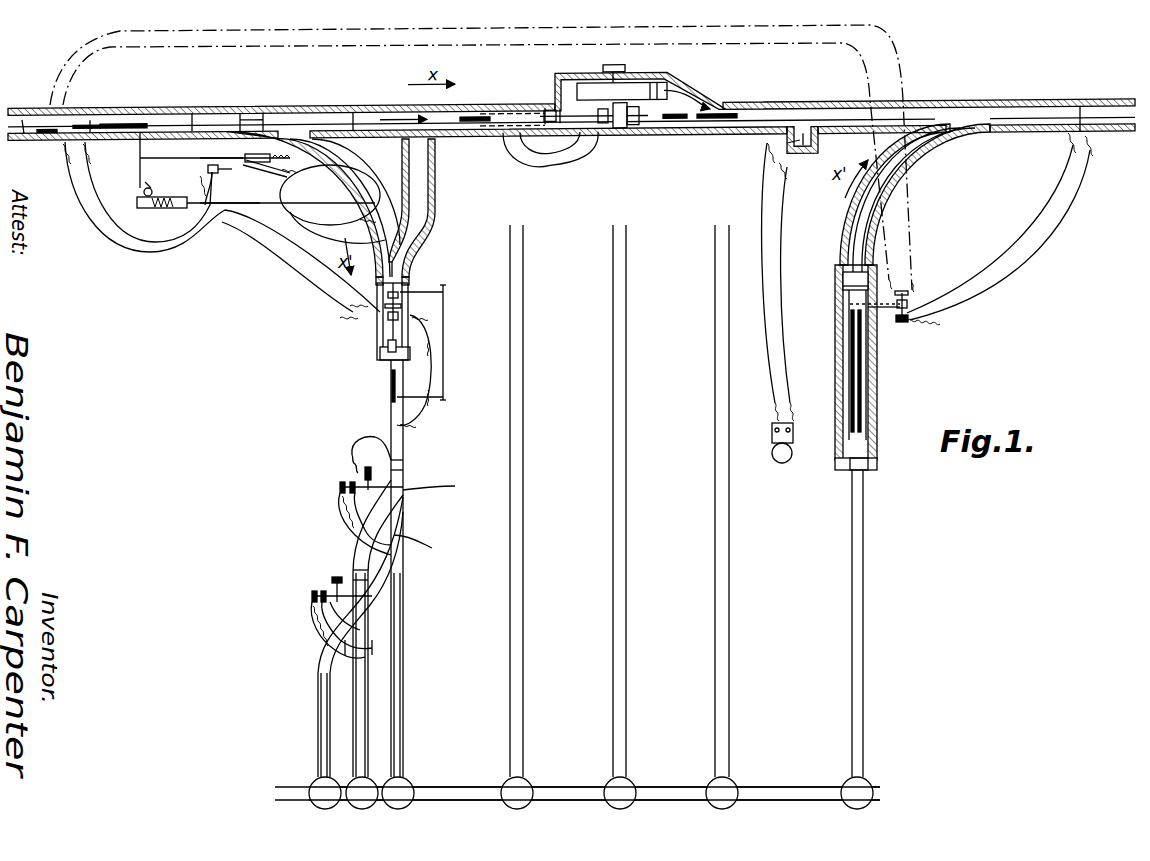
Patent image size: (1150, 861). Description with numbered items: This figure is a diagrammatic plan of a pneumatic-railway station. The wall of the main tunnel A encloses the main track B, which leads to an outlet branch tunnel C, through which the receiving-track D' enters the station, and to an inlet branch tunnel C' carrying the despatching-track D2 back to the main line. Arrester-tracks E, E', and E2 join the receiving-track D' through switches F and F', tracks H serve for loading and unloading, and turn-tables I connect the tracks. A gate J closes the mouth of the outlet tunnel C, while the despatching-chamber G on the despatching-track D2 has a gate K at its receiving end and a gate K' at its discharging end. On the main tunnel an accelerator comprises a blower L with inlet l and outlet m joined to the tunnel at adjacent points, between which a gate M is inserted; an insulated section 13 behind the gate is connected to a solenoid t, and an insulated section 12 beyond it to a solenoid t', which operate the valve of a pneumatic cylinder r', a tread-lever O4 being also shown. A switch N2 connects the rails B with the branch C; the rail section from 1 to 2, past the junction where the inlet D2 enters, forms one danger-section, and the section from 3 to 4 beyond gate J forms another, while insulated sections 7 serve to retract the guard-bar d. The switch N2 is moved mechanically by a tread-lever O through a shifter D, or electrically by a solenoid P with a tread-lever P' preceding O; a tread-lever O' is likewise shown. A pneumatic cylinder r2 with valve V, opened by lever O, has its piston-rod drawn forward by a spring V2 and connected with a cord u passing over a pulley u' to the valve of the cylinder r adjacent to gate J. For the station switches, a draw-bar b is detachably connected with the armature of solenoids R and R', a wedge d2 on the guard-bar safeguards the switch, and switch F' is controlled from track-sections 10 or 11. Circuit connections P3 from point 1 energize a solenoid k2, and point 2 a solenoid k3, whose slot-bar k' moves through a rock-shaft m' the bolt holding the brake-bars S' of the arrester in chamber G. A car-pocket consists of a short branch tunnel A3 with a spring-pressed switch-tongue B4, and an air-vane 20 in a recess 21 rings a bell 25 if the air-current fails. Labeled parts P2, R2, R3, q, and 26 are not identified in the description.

The main tunnel wall A is at (987, 112).
The main track B is at (24, 134).
The blower L is at (558, 88).
The blower inlet l is at (628, 96).
The solenoid t' is at (595, 66).
The blower outlet m is at (704, 89).
The insulated track section 13 is at (520, 118).
The solenoid t is at (575, 136).
The gate M is at (625, 134).
The insulated track section 12 is at (676, 126).
The tread-lever O4 is at (722, 126).
The air-vane 20 is at (800, 134).
The recess 21 is at (812, 150).
The tread-lever O is at (110, 107).
The danger-section start point 1 is at (48, 134).
The tread-lever P' is at (93, 107).
The insulated track section 3 is at (192, 115).
The switch N2 is at (252, 115).
The insulated track sections 7 is at (355, 116).
The danger-section end point 2 is at (1081, 115).
The outlet branch tunnel C is at (313, 204).
The short branch tunnel A3 is at (418, 183).
The switch-tongue B4 is at (392, 258).
The pulley u' is at (385, 214).
The pneumatic cylinder r is at (451, 242).
The pneumatic cylinder r' is at (334, 242).
The gate J is at (383, 356).
The receiving-track D' is at (438, 342).
The tread-lever O' is at (375, 386).
The insulated track section 4 is at (391, 418).
The arrester-track E2 is at (405, 510).
The switch F is at (410, 467).
The despatching-track D2 is at (368, 467).
The draw-bar b is at (404, 487).
The solenoid R is at (355, 495).
The solenoid R' is at (344, 501).
The wedge d2 is at (437, 488).
The pipe q is at (416, 545).
The arrester-track E' is at (378, 628).
The switch F' is at (368, 583).
The arrester-track E is at (344, 637).
The valve R2 is at (335, 577).
The valve R3 is at (314, 595).
The track-section 10 is at (345, 650).
The track-section 11 is at (372, 648).
The pipe P2 is at (150, 242).
The pneumatic cylinder r2 is at (145, 210).
The spring V2 is at (162, 209).
The valve V is at (158, 188).
The solenoid P is at (198, 171).
The shifter D is at (245, 158).
The guard-bar d is at (256, 172).
The cord u is at (292, 204).
The loading and unloading tracks H is at (524, 405).
The turn-tables I is at (577, 808).
The inlet branch tunnel C' is at (898, 198).
The despatching-chamber G is at (836, 366).
The gate K' is at (834, 283).
The brake-bars S' is at (877, 371).
The gate K is at (838, 478).
The rock-shaft m' is at (878, 328).
The slot-bar k' is at (926, 294).
The solenoid k2 is at (910, 285).
The solenoid k3 is at (912, 324).
The pipe 26 is at (770, 202).
The bell 25 is at (774, 459).
The circuit connections P3 is at (214, 31).